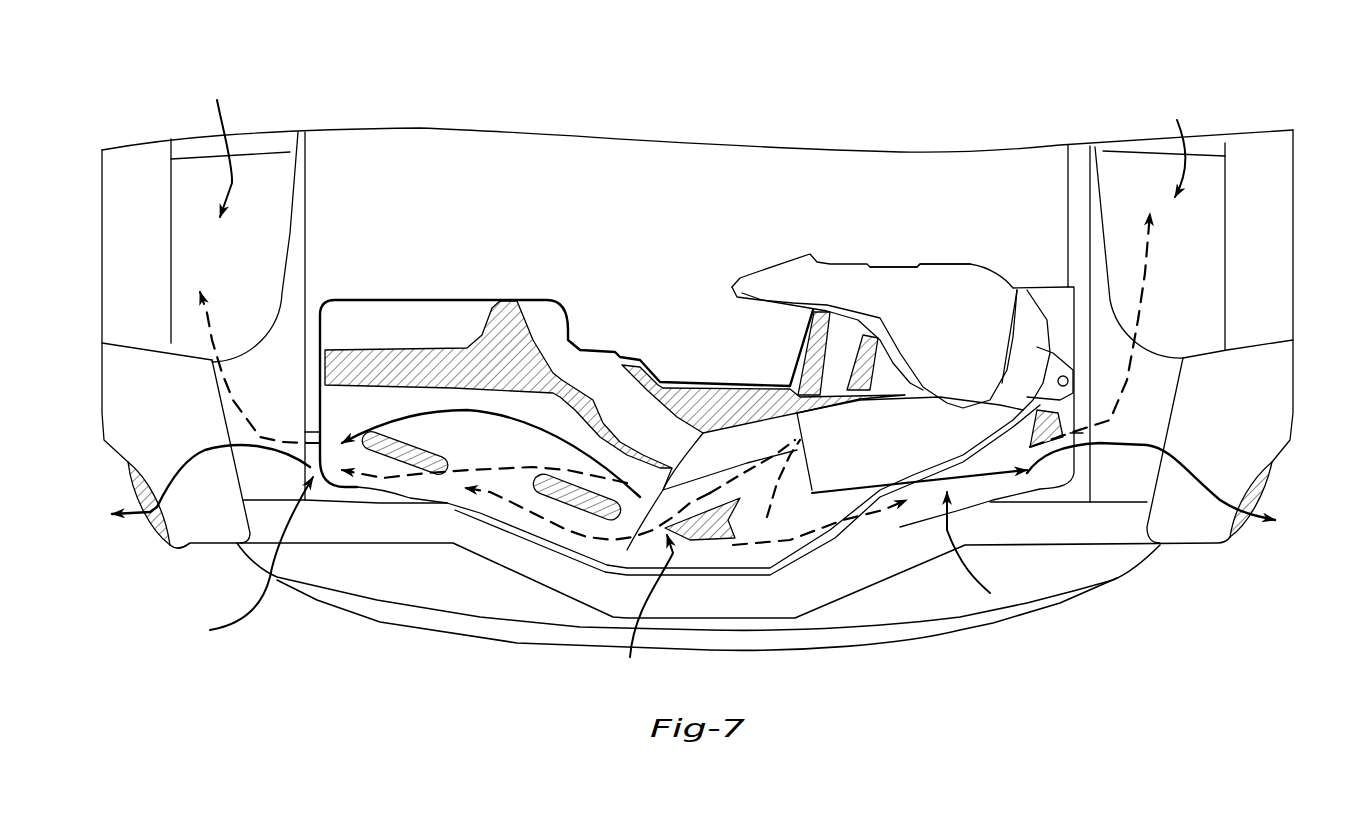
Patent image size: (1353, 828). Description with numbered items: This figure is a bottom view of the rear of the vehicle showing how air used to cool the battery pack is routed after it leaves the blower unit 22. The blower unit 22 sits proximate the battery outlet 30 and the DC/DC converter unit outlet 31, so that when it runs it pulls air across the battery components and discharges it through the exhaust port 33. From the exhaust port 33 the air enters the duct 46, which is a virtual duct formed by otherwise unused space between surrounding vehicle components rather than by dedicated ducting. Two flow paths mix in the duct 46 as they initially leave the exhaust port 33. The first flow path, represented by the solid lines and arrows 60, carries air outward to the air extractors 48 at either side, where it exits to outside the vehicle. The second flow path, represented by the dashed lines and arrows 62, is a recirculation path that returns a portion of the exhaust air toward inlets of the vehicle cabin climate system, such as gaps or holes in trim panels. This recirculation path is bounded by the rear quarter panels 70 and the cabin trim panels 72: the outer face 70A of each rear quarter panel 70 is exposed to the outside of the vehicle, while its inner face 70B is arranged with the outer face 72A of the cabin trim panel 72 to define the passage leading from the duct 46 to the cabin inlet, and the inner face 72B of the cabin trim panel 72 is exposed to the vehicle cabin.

The blower unit 22 is at (1017, 347).
The battery outlet 30 is at (773, 270).
The DC/DC converter unit outlet 31 is at (918, 267).
The exhaust port 33 is at (803, 464).
The duct 46 is at (686, 375).
The air extractor 48 is at (137, 493).
The solid lines and arrows 60 is at (187, 465).
The dashed lines and arrows 62 is at (210, 333).
The rear quarter panel 70 is at (140, 163).
The outer face of rear quarter panel 70A is at (101, 208).
The inner face of rear quarter panel 70B is at (172, 192).
The cabin trim panel 72 is at (298, 132).
The outer face of cabin trim panel 72A is at (290, 177).
The inner face of cabin trim panel 72B is at (304, 154).